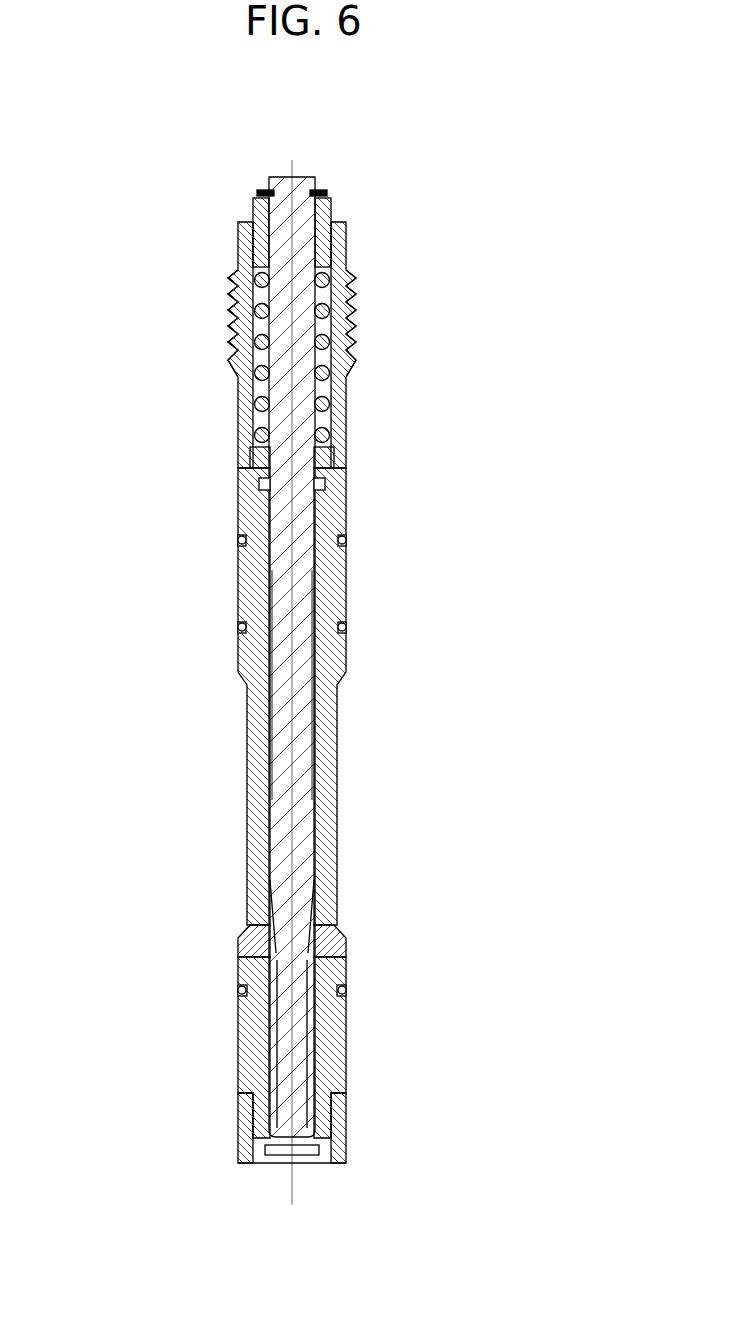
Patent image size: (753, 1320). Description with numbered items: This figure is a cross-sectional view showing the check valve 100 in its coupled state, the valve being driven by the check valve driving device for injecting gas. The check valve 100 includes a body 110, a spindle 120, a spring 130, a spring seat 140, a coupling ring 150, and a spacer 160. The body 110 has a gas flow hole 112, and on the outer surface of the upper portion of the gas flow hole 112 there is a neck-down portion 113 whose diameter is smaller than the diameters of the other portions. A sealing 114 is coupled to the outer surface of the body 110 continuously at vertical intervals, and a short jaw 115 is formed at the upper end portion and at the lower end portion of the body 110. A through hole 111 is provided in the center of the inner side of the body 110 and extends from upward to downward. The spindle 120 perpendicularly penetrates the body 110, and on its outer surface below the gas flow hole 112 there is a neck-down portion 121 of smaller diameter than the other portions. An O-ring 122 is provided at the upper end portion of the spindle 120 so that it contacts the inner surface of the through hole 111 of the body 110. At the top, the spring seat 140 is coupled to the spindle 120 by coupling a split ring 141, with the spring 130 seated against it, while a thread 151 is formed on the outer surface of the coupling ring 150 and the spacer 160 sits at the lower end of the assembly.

The check valve 100 is at (244, 681).
The body 110 is at (303, 1047).
The through hole 111 is at (268, 1048).
The gas flow hole 112 is at (250, 937).
The neck-down portion 113 is at (255, 803).
The sealing 114 is at (347, 541).
The short jaw 115 is at (252, 466).
The spindle 120 is at (349, 666).
The neck-down portion 121 is at (305, 1020).
The O-ring 122 is at (326, 486).
The spring 130 is at (333, 329).
The spring seat 140 is at (337, 245).
The split ring 141 is at (329, 192).
The coupling ring 150 is at (242, 345).
The thread 151 is at (232, 328).
The spacer 160 is at (351, 1111).